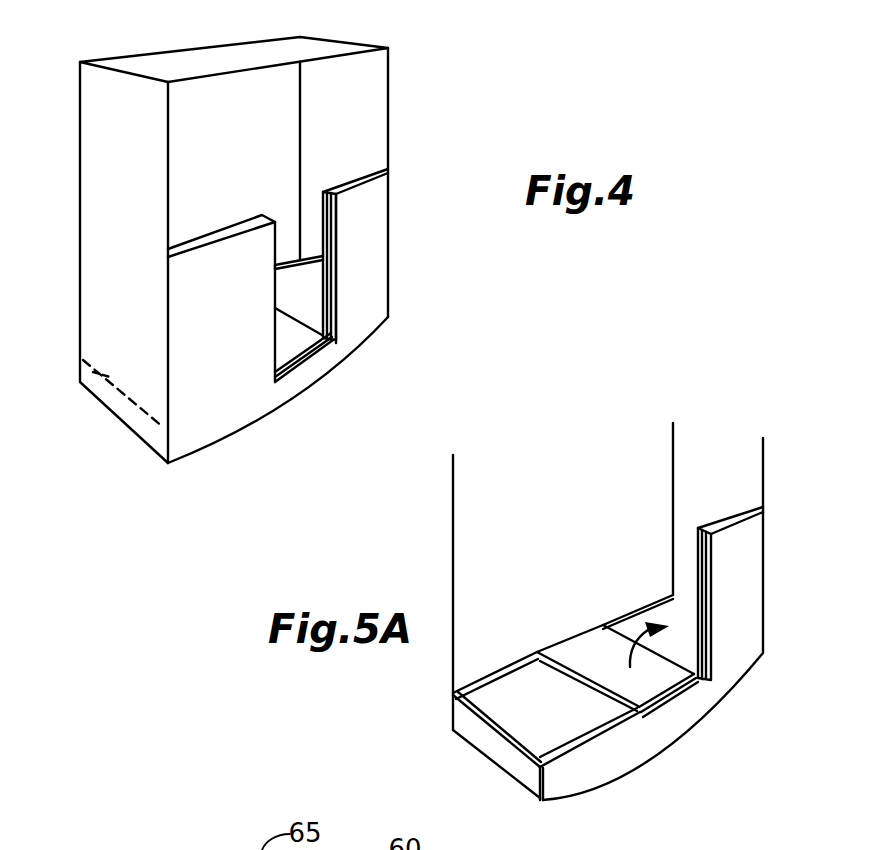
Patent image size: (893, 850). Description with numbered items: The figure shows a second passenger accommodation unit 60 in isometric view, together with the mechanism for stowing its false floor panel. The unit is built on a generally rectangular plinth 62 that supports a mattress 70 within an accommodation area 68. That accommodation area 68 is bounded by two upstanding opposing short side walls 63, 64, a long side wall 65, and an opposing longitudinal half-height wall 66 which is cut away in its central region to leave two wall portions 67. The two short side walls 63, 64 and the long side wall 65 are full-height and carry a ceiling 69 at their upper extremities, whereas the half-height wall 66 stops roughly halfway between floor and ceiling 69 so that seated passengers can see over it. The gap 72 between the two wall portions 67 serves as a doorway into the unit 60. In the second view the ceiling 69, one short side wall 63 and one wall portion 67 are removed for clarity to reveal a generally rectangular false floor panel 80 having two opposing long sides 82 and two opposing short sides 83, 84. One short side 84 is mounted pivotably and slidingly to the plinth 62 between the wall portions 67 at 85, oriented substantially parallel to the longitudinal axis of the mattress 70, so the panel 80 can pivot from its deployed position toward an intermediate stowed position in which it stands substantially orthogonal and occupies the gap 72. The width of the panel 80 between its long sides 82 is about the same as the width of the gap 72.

In FIG. 4, the passenger accommodation unit 60 is at (368, 108).
In FIG. 5A, the passenger accommodation unit 60 is at (738, 460).
In FIG. 4, the plinth 62 is at (88, 387).
In FIG. 5A, the plinth 62 is at (483, 740).
In FIG. 4, the short side wall 63 is at (122, 208).
In FIG. 4, the short side wall 64 is at (372, 146).
In FIG. 5A, the short side wall 64 is at (722, 493).
In FIG. 4, the long side wall 65 is at (277, 93).
In FIG. 5A, the long side wall 65 is at (653, 470).
In FIG. 4, the half-height wall 66 is at (372, 248).
In FIG. 4, the wall portions 67 is at (360, 288).
In FIG. 5A, the wall portions 67 is at (740, 570).
In FIG. 4, the accommodation area 68 is at (245, 143).
In FIG. 5A, the accommodation area 68 is at (580, 512).
In FIG. 4, the ceiling 69 is at (242, 55).
In FIG. 4, the mattress 70 is at (298, 287).
In FIG. 5A, the mattress 70 is at (630, 617).
In FIG. 4, the gap 72 is at (325, 238).
In FIG. 5A, the false floor panel 80 is at (550, 640).
In FIG. 5A, the long sides 82 is at (580, 683).
In FIG. 5A, the short side 83 is at (552, 637).
In FIG. 5A, the short side 84 is at (693, 693).
In FIG. 5A, the mounting location 85 is at (667, 710).